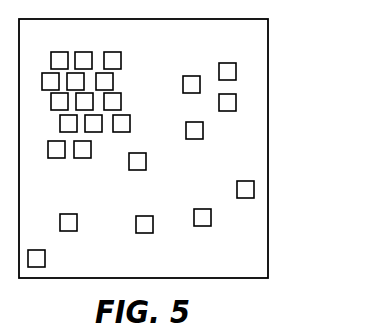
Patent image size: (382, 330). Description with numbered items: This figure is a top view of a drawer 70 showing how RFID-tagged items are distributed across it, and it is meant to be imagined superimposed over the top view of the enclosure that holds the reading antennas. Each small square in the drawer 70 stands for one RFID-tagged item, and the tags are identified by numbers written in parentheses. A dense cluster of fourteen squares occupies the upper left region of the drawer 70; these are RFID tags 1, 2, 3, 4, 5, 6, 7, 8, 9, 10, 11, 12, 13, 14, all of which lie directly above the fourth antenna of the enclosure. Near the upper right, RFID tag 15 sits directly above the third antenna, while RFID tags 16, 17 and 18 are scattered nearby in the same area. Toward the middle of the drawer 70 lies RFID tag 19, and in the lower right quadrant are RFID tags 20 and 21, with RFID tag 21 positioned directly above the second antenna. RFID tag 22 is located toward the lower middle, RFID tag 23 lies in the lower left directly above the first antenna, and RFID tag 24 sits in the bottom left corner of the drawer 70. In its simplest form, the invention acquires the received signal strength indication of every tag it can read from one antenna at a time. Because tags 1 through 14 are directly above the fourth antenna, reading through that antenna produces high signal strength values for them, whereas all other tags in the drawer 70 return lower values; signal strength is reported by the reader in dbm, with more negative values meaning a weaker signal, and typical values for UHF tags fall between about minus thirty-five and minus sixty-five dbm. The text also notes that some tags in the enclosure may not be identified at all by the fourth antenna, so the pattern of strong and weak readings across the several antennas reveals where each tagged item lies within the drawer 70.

The drawer 70 is at (268, 65).
The RFID tag 1 is at (79, 48).
The RFID tag 2 is at (83, 60).
The RFID tag 3 is at (112, 60).
The RFID tag 4 is at (50, 81).
The RFID tag 5 is at (75, 81).
The RFID tag 6 is at (104, 81).
The RFID tag 7 is at (59, 101).
The RFID tag 8 is at (84, 101).
The RFID tag 9 is at (112, 101).
The RFID tag 10 is at (68, 123).
The RFID tag 11 is at (93, 123).
The RFID tag 12 is at (121, 123).
The RFID tag 13 is at (56, 149).
The RFID tag 14 is at (82, 149).
The RFID tag 15 is at (231, 59).
The RFID tag 16 is at (192, 71).
The RFID tag 17 is at (227, 115).
The RFID tag 18 is at (197, 143).
The RFID tag 19 is at (136, 174).
The RFID tag 20 is at (246, 201).
The RFID tag 21 is at (204, 231).
The RFID tag 22 is at (145, 236).
The RFID tag 23 is at (67, 210).
The RFID tag 24 is at (55, 257).